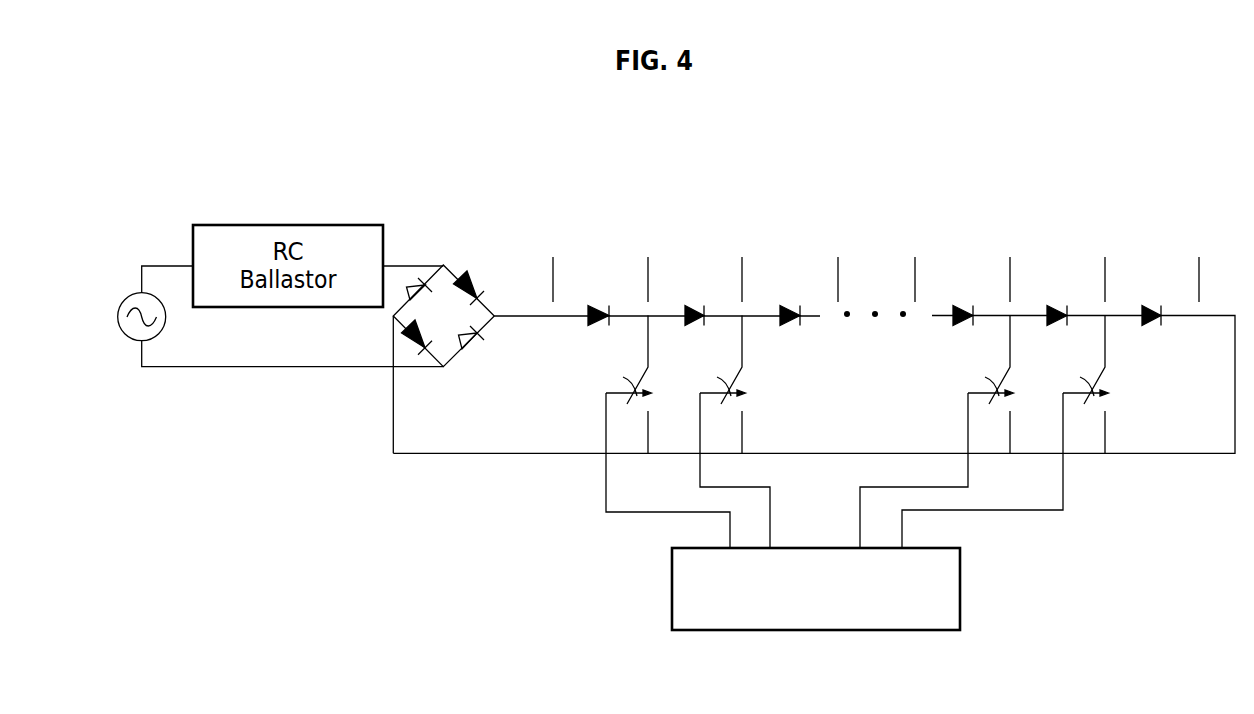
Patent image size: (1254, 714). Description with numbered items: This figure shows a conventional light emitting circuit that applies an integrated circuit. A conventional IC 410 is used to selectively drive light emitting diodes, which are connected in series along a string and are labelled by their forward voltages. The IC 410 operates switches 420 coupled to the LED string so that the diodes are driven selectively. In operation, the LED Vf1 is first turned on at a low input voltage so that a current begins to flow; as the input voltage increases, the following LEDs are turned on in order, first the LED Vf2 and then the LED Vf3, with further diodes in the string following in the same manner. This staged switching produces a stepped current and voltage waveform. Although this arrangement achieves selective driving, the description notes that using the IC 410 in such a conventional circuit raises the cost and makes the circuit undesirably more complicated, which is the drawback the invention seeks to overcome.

The conventional IC 410 is at (962, 586).
The switch 420 is at (833, 381).
The LED Vf1 is at (600, 291).
The LED Vf2 is at (709, 291).
The LED Vf3 is at (804, 291).